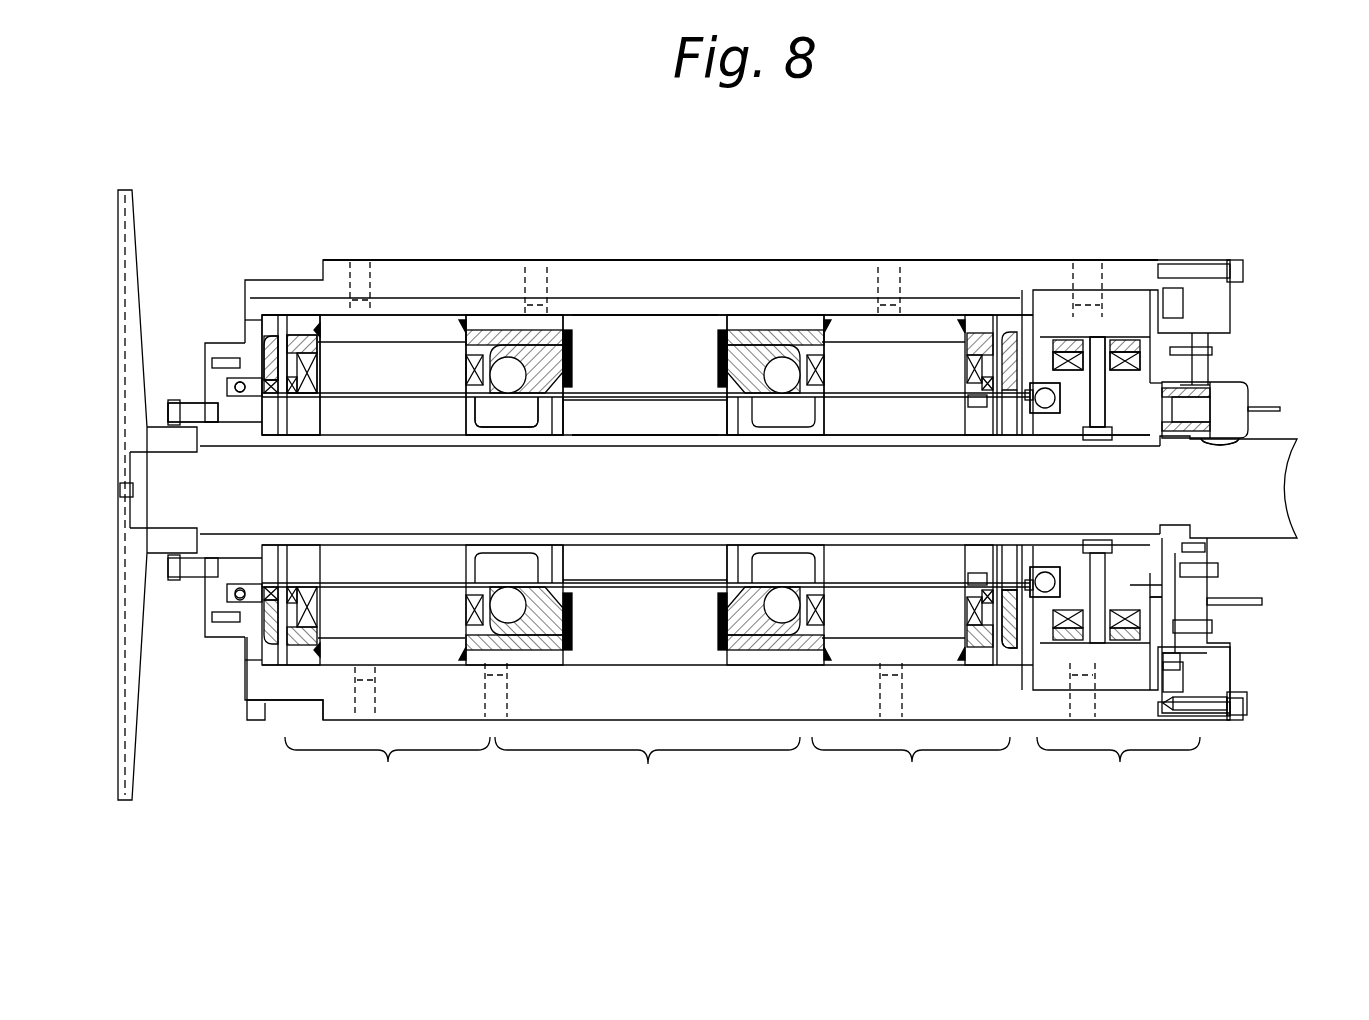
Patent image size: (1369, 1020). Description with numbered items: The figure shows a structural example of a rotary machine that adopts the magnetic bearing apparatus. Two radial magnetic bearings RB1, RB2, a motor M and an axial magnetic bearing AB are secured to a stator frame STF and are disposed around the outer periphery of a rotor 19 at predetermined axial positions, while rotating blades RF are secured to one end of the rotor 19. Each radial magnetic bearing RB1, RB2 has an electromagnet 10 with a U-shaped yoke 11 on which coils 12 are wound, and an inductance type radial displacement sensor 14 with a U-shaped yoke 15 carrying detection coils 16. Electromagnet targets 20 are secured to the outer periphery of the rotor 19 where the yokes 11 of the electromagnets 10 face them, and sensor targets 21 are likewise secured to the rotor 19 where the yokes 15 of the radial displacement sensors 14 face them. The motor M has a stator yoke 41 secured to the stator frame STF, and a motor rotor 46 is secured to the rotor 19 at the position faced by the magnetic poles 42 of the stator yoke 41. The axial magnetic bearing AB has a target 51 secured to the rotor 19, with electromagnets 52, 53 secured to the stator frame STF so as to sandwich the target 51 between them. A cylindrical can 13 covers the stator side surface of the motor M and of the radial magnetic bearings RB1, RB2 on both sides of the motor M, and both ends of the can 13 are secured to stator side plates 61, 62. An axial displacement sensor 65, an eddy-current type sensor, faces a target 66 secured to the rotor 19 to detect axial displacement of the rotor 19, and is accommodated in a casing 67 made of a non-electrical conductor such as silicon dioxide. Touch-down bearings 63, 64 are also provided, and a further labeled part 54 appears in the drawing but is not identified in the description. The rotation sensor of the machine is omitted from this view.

The electromagnet 10 is at (441, 302).
The yoke 11 is at (440, 365).
The coils 12 is at (490, 375).
The cylindrical can 13 is at (523, 406).
The radial displacement sensor 14 is at (284, 305).
The yoke 15 is at (290, 365).
The detection coils 16 is at (268, 360).
The rotor 19 is at (258, 383).
The electromagnet targets 20 is at (402, 413).
The sensor targets 21 is at (277, 423).
The stator yoke 41 is at (660, 303).
The magnetic poles 42 is at (683, 358).
The motor rotor 46 is at (619, 420).
The target 51 is at (1102, 337).
The electromagnet 52 is at (1056, 298).
The electromagnet 53 is at (1141, 298).
The end block 54 is at (1140, 657).
The stator side plate 61 is at (272, 654).
The stator side plate 62 is at (1020, 655).
The touch-down bearing 63 is at (233, 610).
The touch-down bearing 64 is at (1047, 595).
The axial displacement sensor 65 is at (1235, 380).
The target 66 is at (1140, 562).
The casing 67 is at (1248, 437).
The stator frame STF is at (701, 259).
The rotating blades RF is at (140, 677).
The radial magnetic bearing RB1 is at (387, 773).
The radial magnetic bearing RB2 is at (911, 773).
The motor M is at (647, 769).
The axial magnetic bearing AB is at (1118, 773).